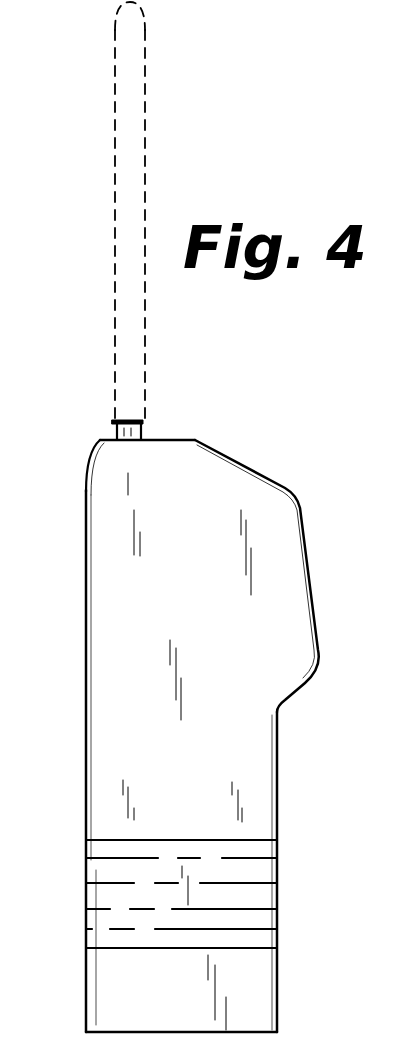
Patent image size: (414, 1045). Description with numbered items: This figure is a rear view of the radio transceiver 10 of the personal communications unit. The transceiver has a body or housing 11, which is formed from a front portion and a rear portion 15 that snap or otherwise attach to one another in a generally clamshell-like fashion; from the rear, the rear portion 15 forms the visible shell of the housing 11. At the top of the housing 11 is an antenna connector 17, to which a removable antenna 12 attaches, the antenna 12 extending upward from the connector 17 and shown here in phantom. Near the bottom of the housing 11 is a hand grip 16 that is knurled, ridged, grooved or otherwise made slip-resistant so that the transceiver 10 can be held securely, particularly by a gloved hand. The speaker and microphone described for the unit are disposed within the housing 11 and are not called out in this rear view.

The radio transceiver 10 is at (73, 623).
The body or housing 11 is at (293, 570).
The removable antenna 12 is at (115, 338).
The rear portion 15 is at (88, 775).
The hand grip 16 is at (90, 897).
The antenna connector 17 is at (113, 422).